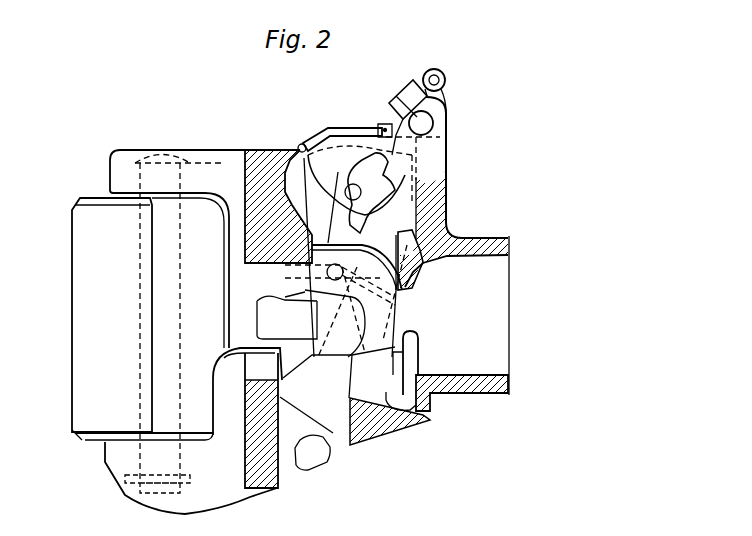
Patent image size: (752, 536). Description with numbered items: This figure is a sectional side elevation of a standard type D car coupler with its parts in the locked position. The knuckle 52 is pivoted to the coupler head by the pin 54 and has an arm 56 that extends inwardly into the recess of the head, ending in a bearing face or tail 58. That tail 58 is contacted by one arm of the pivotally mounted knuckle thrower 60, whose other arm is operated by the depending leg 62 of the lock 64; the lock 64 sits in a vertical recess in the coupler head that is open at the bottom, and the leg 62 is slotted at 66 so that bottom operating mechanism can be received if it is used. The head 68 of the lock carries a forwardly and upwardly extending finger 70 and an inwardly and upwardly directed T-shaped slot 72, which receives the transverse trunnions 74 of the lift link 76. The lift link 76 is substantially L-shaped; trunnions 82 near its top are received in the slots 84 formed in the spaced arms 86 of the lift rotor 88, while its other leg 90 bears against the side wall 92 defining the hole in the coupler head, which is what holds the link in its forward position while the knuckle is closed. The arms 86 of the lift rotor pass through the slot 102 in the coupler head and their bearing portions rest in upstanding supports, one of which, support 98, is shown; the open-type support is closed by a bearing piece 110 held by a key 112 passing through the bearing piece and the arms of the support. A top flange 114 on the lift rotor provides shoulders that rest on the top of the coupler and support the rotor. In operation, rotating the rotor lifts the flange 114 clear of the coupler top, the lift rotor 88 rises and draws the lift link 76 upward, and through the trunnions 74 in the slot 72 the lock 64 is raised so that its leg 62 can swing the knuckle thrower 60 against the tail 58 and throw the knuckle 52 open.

The knuckle 52 is at (87, 306).
The pin 54 is at (137, 450).
The arm 56 is at (178, 329).
The bearing face or tail 58 is at (293, 365).
The knuckle thrower 60 is at (414, 343).
The depending leg 62 is at (340, 427).
The lock 64 is at (300, 335).
The slot 66 is at (304, 457).
The head of the lock 68 is at (307, 301).
The finger 70 is at (267, 315).
The T-shaped slot 72 is at (376, 256).
The trunnions 74 is at (332, 260).
The lift link 76 is at (376, 233).
The trunnions 82 is at (322, 177).
The slots 84 is at (400, 165).
The arms 86 is at (339, 145).
The lift rotor 88 is at (366, 125).
The leg 90 is at (424, 270).
The side wall 92 is at (426, 247).
The upstanding support 98 is at (440, 104).
The slot 102 is at (297, 149).
The bearing piece 110 is at (403, 92).
The key 112 is at (438, 66).
The top flange 114 is at (301, 145).